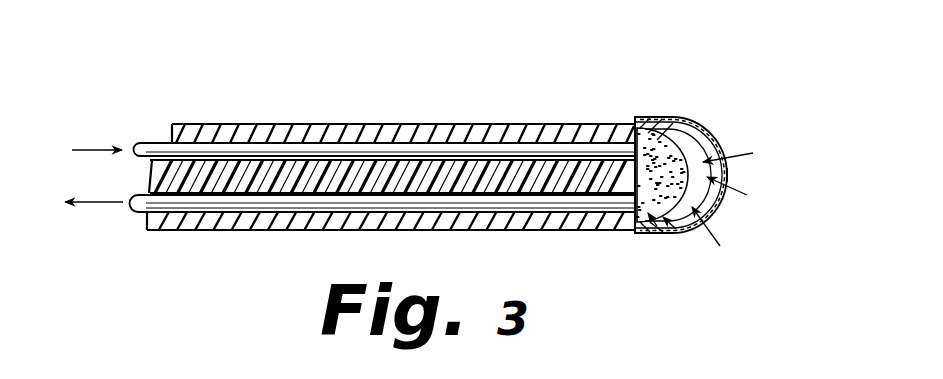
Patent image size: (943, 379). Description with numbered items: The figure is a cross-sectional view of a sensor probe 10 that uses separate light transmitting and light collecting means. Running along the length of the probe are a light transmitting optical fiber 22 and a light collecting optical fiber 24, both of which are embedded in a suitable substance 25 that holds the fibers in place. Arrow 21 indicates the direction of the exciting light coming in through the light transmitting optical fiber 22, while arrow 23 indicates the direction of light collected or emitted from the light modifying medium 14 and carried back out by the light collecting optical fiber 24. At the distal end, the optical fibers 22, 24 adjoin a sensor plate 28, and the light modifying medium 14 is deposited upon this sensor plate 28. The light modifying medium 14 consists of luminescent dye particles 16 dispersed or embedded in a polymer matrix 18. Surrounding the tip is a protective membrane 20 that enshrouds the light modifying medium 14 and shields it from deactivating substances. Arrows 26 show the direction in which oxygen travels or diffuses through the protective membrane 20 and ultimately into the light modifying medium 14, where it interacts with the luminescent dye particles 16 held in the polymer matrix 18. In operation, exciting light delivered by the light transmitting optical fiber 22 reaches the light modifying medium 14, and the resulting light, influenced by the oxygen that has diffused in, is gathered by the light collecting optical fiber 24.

The sensor probe 10 is at (437, 97).
The light modifying medium 14 is at (684, 136).
The luminescent dye particles 16 is at (664, 232).
The polymer matrix 18 is at (698, 200).
The protective membrane 20 is at (727, 173).
The arrow 21 is at (86, 150).
The light transmitting optical fiber 22 is at (154, 143).
The arrow 23 is at (97, 207).
The light collecting optical fiber 24 is at (138, 213).
The suitable substance 25 is at (253, 230).
The arrows 26 is at (716, 127).
The sensor plate 28 is at (633, 123).